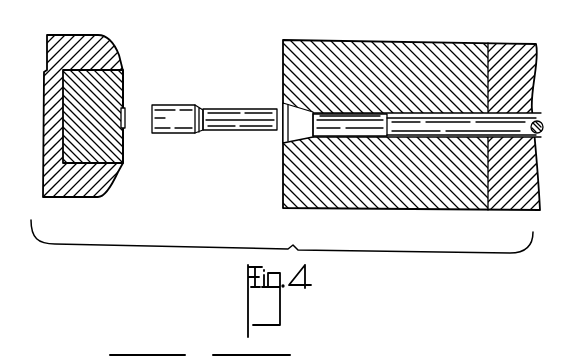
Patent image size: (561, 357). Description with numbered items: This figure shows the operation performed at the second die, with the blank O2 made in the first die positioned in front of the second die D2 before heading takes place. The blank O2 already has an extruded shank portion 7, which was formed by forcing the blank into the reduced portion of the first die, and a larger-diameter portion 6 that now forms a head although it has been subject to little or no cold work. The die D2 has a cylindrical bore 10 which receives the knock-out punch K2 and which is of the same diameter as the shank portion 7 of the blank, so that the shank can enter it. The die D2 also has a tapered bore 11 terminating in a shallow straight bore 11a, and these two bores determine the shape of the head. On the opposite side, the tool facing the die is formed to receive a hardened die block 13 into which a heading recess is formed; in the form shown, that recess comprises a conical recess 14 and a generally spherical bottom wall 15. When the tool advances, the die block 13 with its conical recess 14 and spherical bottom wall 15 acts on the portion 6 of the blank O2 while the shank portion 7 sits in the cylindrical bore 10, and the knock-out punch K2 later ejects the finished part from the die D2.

The hardened die block 13 is at (124, 74).
The conical recess 14 is at (127, 104).
The generally spherical bottom wall 15 is at (124, 124).
The portion of the blank 6 is at (166, 134).
The extruded shank portion 7 is at (222, 132).
The blank O2 is at (219, 101).
The tapered bore 11 is at (284, 106).
The shallow straight bore 11a is at (282, 141).
The cylindrical bore 10 is at (350, 134).
The knock-out punch K2 is at (413, 139).
The die D2 is at (433, 212).